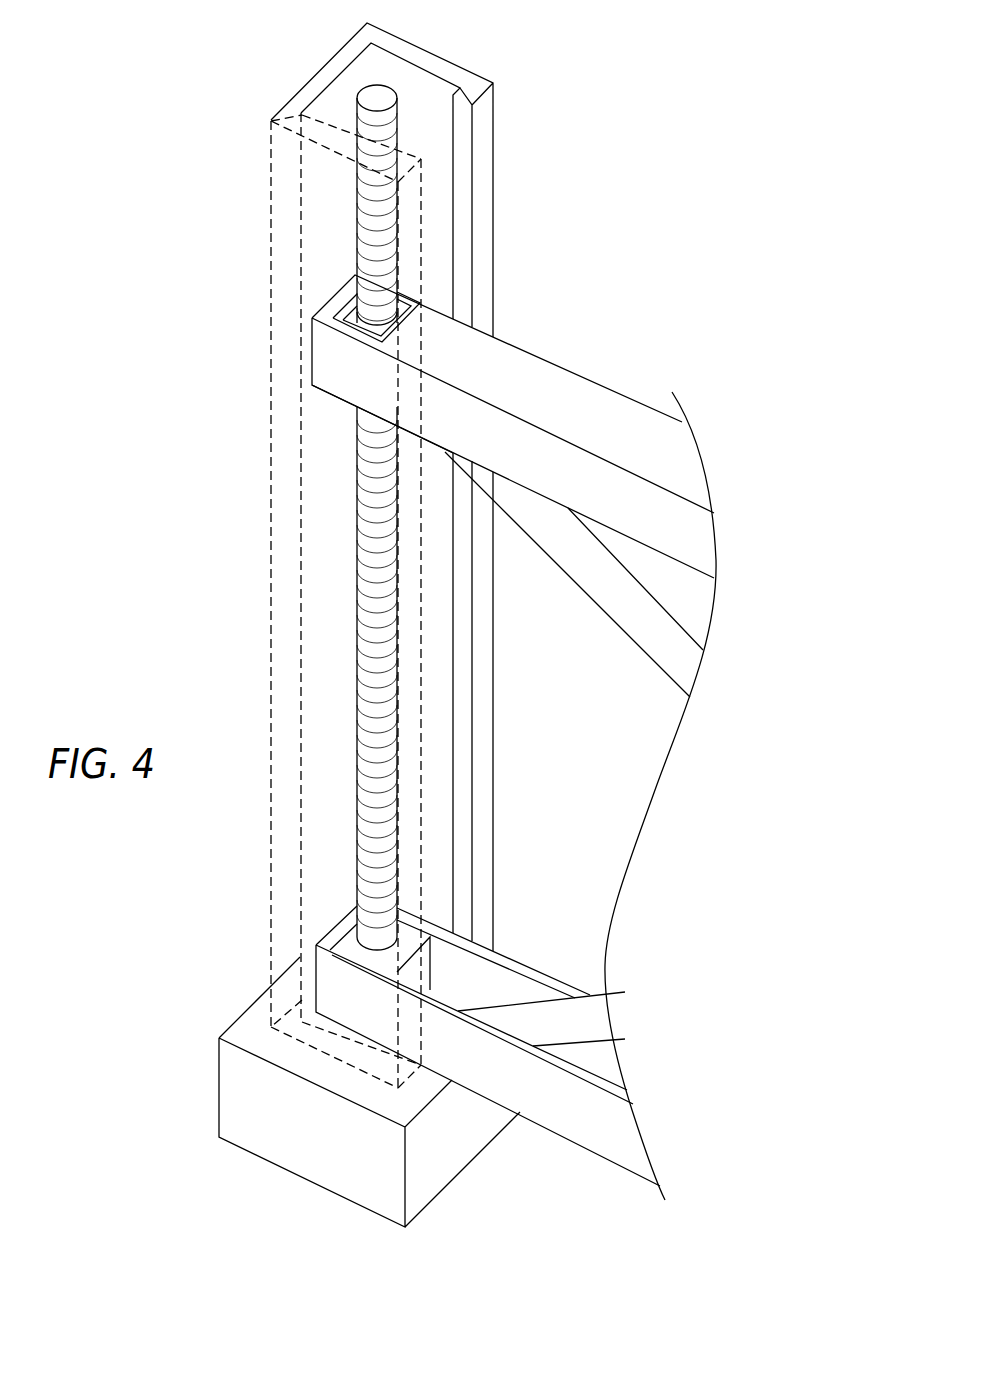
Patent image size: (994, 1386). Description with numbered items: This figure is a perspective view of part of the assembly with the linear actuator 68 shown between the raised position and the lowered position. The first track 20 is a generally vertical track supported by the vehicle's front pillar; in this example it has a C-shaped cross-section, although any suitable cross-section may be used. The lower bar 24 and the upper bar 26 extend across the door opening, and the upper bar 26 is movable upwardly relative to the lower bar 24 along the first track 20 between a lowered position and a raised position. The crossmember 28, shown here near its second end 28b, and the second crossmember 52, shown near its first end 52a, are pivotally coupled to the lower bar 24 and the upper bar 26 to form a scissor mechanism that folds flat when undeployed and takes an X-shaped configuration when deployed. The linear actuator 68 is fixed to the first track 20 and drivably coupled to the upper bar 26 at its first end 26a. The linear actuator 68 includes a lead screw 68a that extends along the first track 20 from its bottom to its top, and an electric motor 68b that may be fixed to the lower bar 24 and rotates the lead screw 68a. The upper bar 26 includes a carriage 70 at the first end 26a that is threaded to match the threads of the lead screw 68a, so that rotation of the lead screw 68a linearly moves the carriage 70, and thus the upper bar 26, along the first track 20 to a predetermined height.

The first track 20 is at (497, 148).
The lower bar 24 is at (557, 1133).
The upper bar 26 is at (607, 407).
The first end 26a is at (436, 322).
The crossmember 28 is at (590, 990).
The second end 28b is at (447, 987).
The second crossmember 52 is at (630, 638).
The first end 52a is at (436, 452).
The linear actuator 68 is at (330, 555).
The lead screw 68a is at (368, 93).
The electric motor 68b is at (348, 941).
The carriage 70 is at (352, 331).